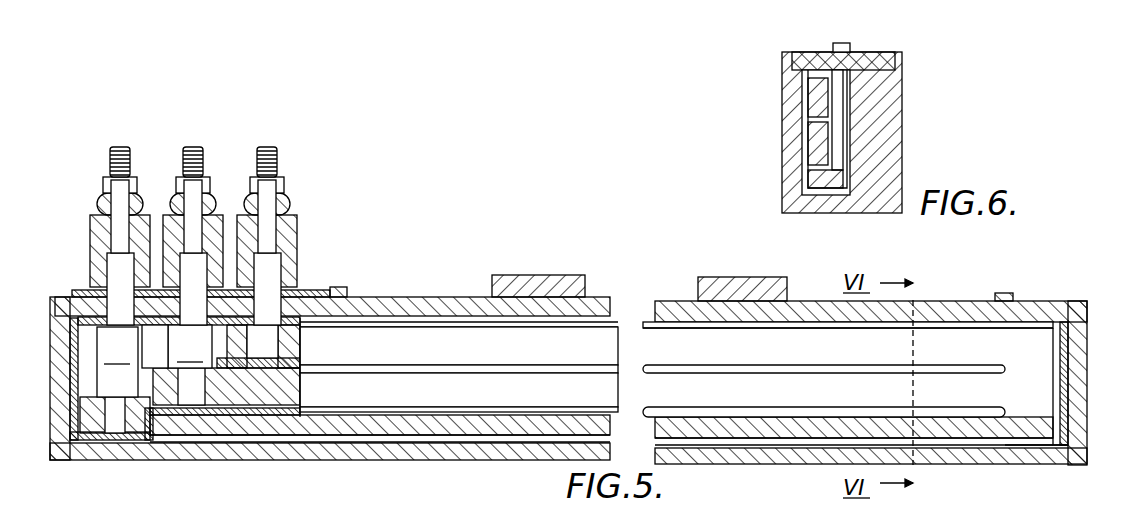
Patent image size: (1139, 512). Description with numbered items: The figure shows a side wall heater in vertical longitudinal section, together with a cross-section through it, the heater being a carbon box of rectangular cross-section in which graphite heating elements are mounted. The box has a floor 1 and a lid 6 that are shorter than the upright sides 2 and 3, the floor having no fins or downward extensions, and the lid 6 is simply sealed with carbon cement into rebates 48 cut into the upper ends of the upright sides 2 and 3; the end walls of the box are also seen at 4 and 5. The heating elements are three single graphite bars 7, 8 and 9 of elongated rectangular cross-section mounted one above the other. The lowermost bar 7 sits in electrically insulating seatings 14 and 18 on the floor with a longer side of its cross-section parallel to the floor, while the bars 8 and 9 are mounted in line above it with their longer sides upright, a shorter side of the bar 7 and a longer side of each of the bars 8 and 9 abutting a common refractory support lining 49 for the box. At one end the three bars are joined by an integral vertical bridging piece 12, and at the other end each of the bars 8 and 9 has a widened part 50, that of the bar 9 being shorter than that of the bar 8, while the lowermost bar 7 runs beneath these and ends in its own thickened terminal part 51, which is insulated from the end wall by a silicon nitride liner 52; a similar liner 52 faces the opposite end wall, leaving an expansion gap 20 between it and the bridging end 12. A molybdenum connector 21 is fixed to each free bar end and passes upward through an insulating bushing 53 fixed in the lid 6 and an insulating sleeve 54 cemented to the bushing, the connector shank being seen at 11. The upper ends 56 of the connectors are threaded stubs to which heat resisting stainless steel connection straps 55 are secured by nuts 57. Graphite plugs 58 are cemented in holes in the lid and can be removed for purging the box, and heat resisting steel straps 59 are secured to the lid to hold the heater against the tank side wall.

In FIG. 5, the floor 1 is at (745, 450).
In FIG. 6, the floor 1 is at (828, 205).
In FIG. 6, the upright side 2 is at (885, 125).
In FIG. 6, the upright side 3 is at (790, 135).
In FIG. 5, the end wall 4 is at (60, 400).
In FIG. 5, the end wall 5 is at (1083, 431).
In FIG. 5, the lid 6 is at (828, 313).
In FIG. 6, the lid 6 is at (864, 55).
In FIG. 5, the lowermost bar 7 is at (707, 425).
In FIG. 6, the lowermost bar 7 is at (822, 178).
In FIG. 5, the bar 8 is at (795, 393).
In FIG. 6, the bar 8 is at (818, 160).
In FIG. 5, the bar 9 is at (962, 340).
In FIG. 6, the bar 9 is at (815, 103).
In FIG. 5, the terminal stem 11 is at (118, 243).
In FIG. 5, the bridging piece 12 is at (115, 415).
In FIG. 5, the insulating seating 14 is at (220, 440).
In FIG. 5, the insulating seating 18 is at (1040, 442).
In FIG. 6, the insulating seating 18 is at (842, 190).
In FIG. 5, the expansion gap 20 is at (1063, 371).
In FIG. 5, the molybdenum connector 21 is at (272, 268).
In FIG. 6, the rebate 48 is at (895, 60).
In FIG. 6, the support lining 49 is at (812, 158).
In FIG. 5, the widened part 50 is at (300, 341).
In FIG. 5, the terminal part 51 is at (88, 418).
In FIG. 5, the silicon nitride liner 52 is at (72, 372).
In FIG. 5, the insulating bushing 53 is at (305, 291).
In FIG. 5, the insulating sleeve 54 is at (290, 238).
In FIG. 5, the connection strap 55 is at (97, 203).
In FIG. 5, the upper end 56 is at (277, 160).
In FIG. 5, the nut 57 is at (283, 186).
In FIG. 5, the graphite plug 58 is at (348, 291).
In FIG. 5, the steel strap 59 is at (541, 284).